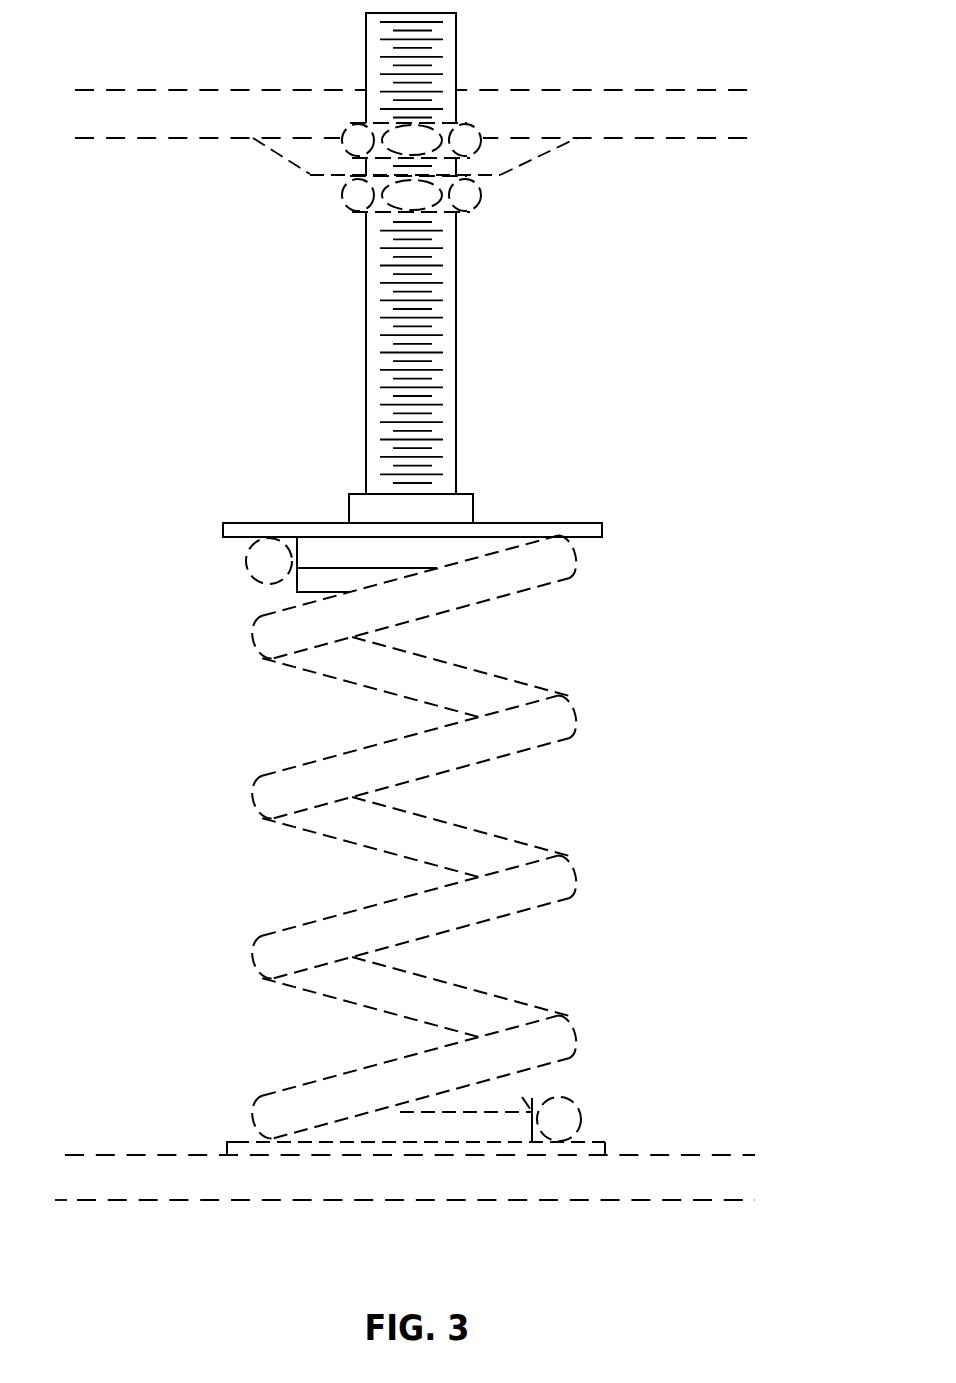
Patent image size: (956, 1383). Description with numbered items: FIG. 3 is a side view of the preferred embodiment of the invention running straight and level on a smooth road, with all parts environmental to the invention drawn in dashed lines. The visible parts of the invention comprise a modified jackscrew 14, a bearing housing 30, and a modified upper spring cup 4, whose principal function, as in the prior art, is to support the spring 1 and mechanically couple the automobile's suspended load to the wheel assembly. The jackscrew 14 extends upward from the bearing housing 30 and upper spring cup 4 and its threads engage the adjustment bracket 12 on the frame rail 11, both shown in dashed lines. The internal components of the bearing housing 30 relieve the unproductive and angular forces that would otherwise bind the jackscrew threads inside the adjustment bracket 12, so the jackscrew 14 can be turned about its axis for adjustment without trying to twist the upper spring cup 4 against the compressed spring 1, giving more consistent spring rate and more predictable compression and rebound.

The spring 1 is at (490, 577).
The modified upper spring cup 4 is at (572, 500).
The frame rail 11 is at (632, 118).
The adjustment bracket 12 is at (512, 157).
The modified jackscrew 14 is at (455, 293).
The bearing housing 30 is at (455, 510).